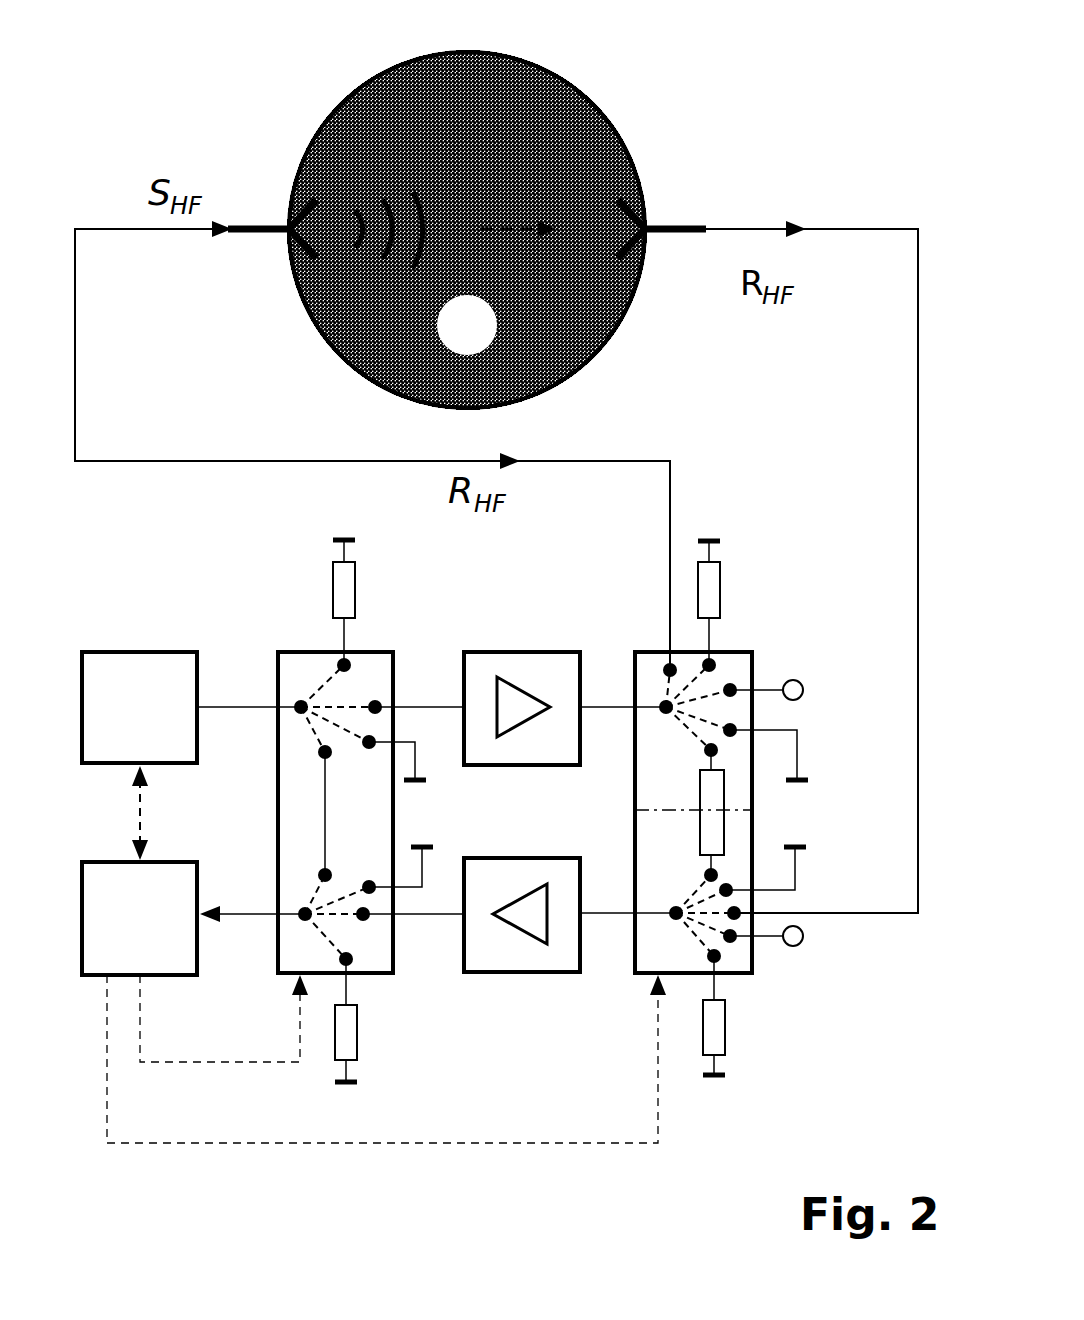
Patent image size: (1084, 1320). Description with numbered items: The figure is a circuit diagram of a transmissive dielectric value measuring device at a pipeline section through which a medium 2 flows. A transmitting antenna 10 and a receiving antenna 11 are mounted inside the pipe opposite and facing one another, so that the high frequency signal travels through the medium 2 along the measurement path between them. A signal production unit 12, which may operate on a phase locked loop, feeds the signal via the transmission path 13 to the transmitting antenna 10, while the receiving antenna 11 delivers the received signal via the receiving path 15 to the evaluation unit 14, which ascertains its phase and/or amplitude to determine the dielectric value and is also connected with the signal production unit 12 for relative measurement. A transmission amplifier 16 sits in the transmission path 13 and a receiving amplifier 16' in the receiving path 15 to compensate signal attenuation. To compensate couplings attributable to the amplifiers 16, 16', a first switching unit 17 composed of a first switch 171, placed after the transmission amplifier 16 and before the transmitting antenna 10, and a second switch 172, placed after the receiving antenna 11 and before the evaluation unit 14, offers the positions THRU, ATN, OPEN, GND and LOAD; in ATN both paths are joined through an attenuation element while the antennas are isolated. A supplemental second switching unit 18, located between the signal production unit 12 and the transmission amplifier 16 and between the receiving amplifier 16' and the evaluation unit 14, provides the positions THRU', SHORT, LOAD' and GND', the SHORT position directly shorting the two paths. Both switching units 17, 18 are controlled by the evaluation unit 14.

The medium 2 is at (455, 273).
The transmitting antenna 10 is at (262, 235).
The receiving antenna 11 is at (673, 233).
The signal production unit 12 is at (139, 707).
The transmission path 13 is at (233, 707).
The evaluation unit 14 is at (374, 954).
The receiving path 15 is at (918, 432).
The transmission amplifier 16 is at (565, 656).
The receiving amplifier 16' is at (570, 964).
The first switching unit 17 is at (743, 799).
The first switch 171 is at (724, 698).
The second switch 172 is at (790, 1030).
The second switching unit 18 is at (363, 973).